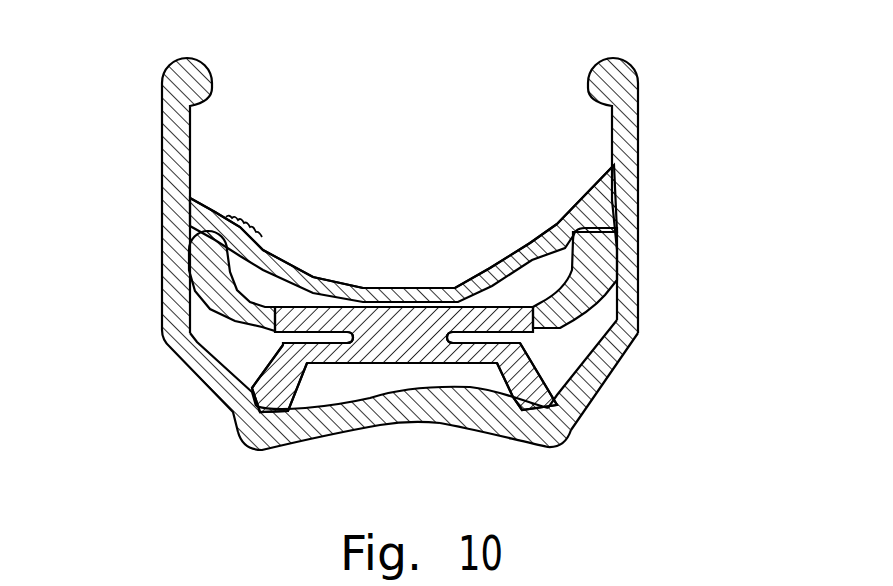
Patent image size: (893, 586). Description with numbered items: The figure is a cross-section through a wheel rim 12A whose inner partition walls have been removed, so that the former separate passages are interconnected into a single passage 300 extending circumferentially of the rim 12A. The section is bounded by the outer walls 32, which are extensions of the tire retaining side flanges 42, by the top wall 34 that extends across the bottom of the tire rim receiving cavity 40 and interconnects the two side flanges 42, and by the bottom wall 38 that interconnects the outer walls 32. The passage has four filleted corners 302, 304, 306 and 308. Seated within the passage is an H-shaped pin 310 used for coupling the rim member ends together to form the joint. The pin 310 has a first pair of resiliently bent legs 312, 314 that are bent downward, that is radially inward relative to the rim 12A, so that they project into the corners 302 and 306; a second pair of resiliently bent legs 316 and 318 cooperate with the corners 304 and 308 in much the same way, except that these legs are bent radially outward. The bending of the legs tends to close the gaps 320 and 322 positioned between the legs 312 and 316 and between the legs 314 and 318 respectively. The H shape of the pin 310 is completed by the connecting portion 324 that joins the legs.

The rim 12A is at (633, 63).
The outer wall 32 is at (162, 150).
The side flange 42 is at (190, 120).
The tire rim receiving cavity 40 is at (373, 177).
The top wall 34 is at (493, 264).
The filleted corner 302 is at (643, 200).
The filleted corner 306 is at (233, 174).
The H-shaped pin 310 is at (378, 318).
The resiliently bent leg 314 is at (243, 287).
The resiliently bent leg 312 is at (600, 295).
The connecting portion 324 is at (420, 325).
The gap 322 is at (283, 338).
The gap 320 is at (500, 333).
The resiliently bent leg 318 is at (292, 392).
The resiliently bent leg 316 is at (543, 358).
The filleted corner 308 is at (236, 424).
The filleted corner 304 is at (568, 436).
The single passage 300 is at (420, 373).
The bottom wall 38 is at (517, 423).